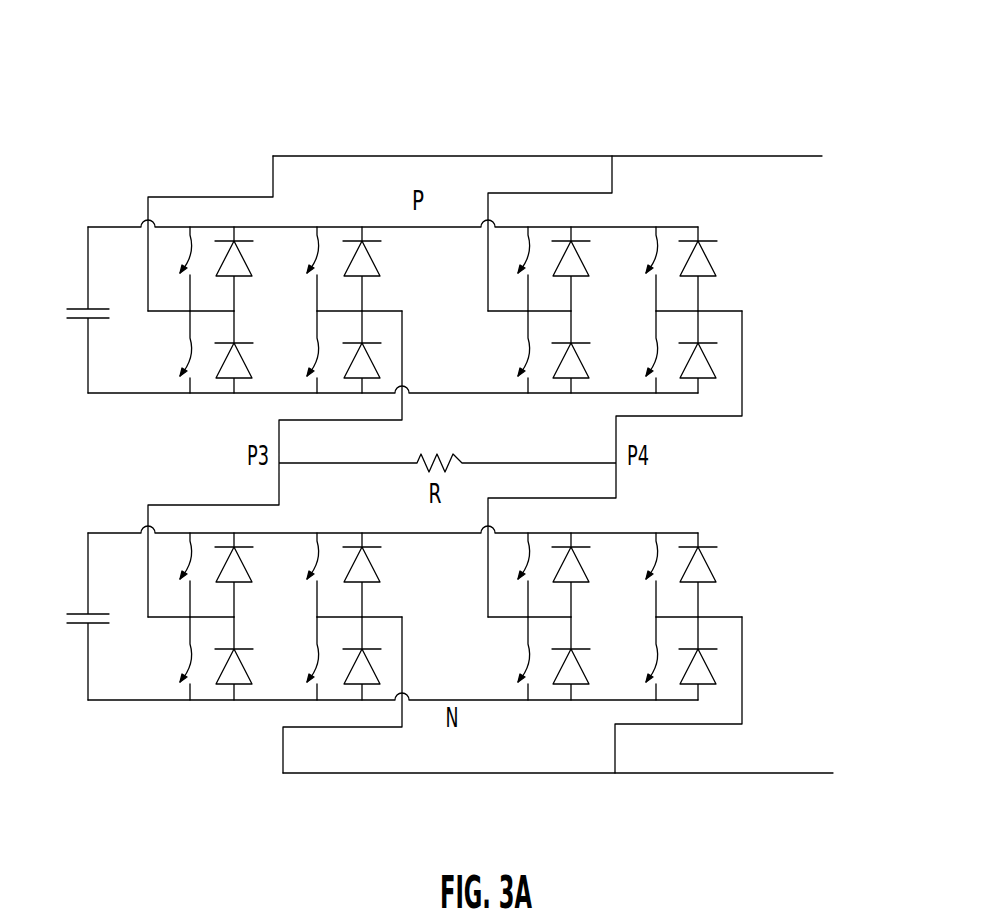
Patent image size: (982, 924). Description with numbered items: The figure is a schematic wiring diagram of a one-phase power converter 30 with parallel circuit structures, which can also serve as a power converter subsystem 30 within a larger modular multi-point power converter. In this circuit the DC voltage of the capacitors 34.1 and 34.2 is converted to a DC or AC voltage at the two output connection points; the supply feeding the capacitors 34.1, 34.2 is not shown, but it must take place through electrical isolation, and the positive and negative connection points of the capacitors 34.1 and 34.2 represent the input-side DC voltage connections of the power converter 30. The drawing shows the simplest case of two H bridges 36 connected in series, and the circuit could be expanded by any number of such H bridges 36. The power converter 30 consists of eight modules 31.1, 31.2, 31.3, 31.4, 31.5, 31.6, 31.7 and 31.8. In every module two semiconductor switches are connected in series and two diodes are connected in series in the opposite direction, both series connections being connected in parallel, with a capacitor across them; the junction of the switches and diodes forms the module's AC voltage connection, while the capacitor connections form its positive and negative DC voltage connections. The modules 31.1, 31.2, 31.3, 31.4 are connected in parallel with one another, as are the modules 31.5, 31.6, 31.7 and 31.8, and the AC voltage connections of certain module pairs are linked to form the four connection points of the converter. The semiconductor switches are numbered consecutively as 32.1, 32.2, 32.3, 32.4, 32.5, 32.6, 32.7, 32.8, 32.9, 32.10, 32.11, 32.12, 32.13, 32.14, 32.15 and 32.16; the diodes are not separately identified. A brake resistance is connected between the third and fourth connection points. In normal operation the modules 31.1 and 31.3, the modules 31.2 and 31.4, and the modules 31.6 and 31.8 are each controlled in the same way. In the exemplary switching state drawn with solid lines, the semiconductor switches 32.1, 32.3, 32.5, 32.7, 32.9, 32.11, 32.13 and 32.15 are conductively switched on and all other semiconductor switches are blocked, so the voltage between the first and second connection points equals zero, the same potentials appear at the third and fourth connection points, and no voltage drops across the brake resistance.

The power converter 30 is at (835, 647).
The H bridge 36 is at (772, 325).
The capacitor 34.1 is at (67, 310).
The capacitor 34.2 is at (67, 616).
The module 31.1 is at (200, 225).
The module 31.2 is at (341, 225).
The module 31.3 is at (539, 225).
The module 31.4 is at (691, 225).
The module 31.5 is at (196, 699).
The module 31.6 is at (333, 699).
The module 31.7 is at (535, 699).
The module 31.8 is at (674, 699).
The semiconductor switch 32.1 is at (172, 268).
The semiconductor switch 32.2 is at (172, 352).
The semiconductor switch 32.3 is at (299, 268).
The semiconductor switch 32.4 is at (299, 352).
The semiconductor switch 32.5 is at (511, 268).
The semiconductor switch 32.6 is at (511, 352).
The semiconductor switch 32.7 is at (637, 268).
The semiconductor switch 32.8 is at (637, 352).
The semiconductor switch 32.9 is at (172, 574).
The semiconductor switch 32.10 is at (166, 658).
The semiconductor switch 32.11 is at (292, 574).
The semiconductor switch 32.12 is at (292, 658).
The semiconductor switch 32.13 is at (507, 574).
The semiconductor switch 32.14 is at (505, 658).
The semiconductor switch 32.15 is at (632, 574).
The semiconductor switch 32.16 is at (632, 658).